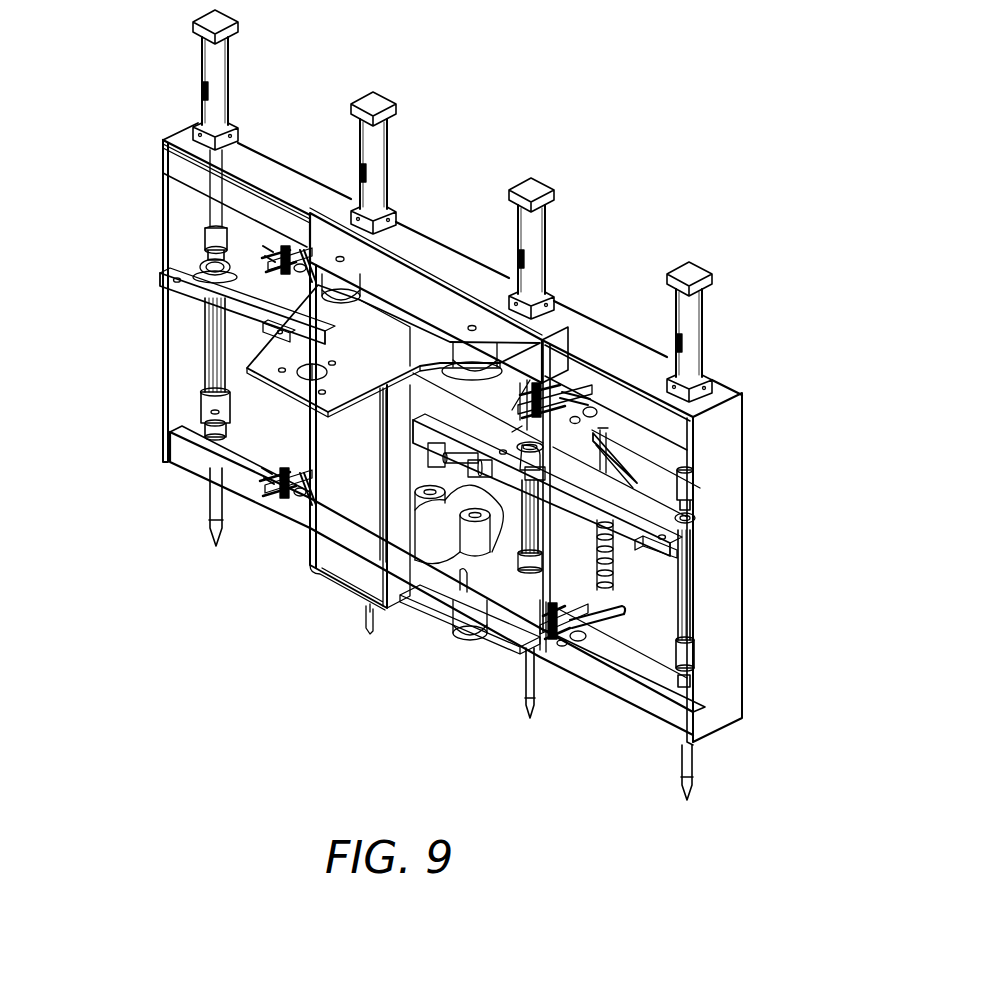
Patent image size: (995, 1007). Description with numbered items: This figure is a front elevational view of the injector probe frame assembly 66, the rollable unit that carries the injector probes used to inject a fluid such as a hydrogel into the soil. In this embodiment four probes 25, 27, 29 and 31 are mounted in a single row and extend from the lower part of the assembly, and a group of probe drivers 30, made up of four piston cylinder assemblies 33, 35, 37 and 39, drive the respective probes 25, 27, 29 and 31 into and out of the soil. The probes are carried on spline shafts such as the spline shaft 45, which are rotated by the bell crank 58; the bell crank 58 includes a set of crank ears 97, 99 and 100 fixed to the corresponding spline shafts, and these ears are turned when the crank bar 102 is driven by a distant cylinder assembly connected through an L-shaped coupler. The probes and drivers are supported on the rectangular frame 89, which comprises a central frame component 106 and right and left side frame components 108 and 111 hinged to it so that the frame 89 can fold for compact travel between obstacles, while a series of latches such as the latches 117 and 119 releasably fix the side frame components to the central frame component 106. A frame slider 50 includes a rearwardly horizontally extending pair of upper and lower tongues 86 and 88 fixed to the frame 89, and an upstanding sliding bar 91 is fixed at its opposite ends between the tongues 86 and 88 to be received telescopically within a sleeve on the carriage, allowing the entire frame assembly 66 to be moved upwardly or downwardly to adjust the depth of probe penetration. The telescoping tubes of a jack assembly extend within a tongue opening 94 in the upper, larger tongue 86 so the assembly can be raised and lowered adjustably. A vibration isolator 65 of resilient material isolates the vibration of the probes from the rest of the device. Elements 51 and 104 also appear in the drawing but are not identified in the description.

The probe 25 is at (198, 522).
The probe 27 is at (362, 631).
The probe 29 is at (545, 687).
The probe drivers 30 is at (170, 67).
The probe 31 is at (704, 785).
The piston cylinder assembly 33 is at (248, 60).
The piston cylinder assembly 35 is at (406, 142).
The piston cylinder assembly 37 is at (558, 228).
The piston cylinder assembly 39 is at (720, 316).
The spline shaft 45 is at (197, 347).
The frame slider 50 is at (477, 622).
The cylinder 51 is at (440, 349).
The bell crank 58 is at (639, 515).
The vibration isolator 65 is at (340, 299).
The injector probe frame assembly 66 is at (553, 62).
The upper tongue 86 is at (283, 357).
The lower tongue 88 is at (437, 589).
The rectangular frame 89 is at (728, 641).
The sliding bar 91 is at (341, 557).
The tongue opening 94 is at (355, 363).
The crank ear 97 is at (170, 275).
The crank ear 99 is at (501, 438).
The crank ear 100 is at (703, 546).
The crank bar 102 is at (185, 296).
The bracket 104 is at (482, 487).
The central frame component 106 is at (441, 234).
The right side frame component 108 is at (300, 146).
The left side frame component 111 is at (626, 332).
The latch 117 is at (605, 428).
The latch 119 is at (603, 630).